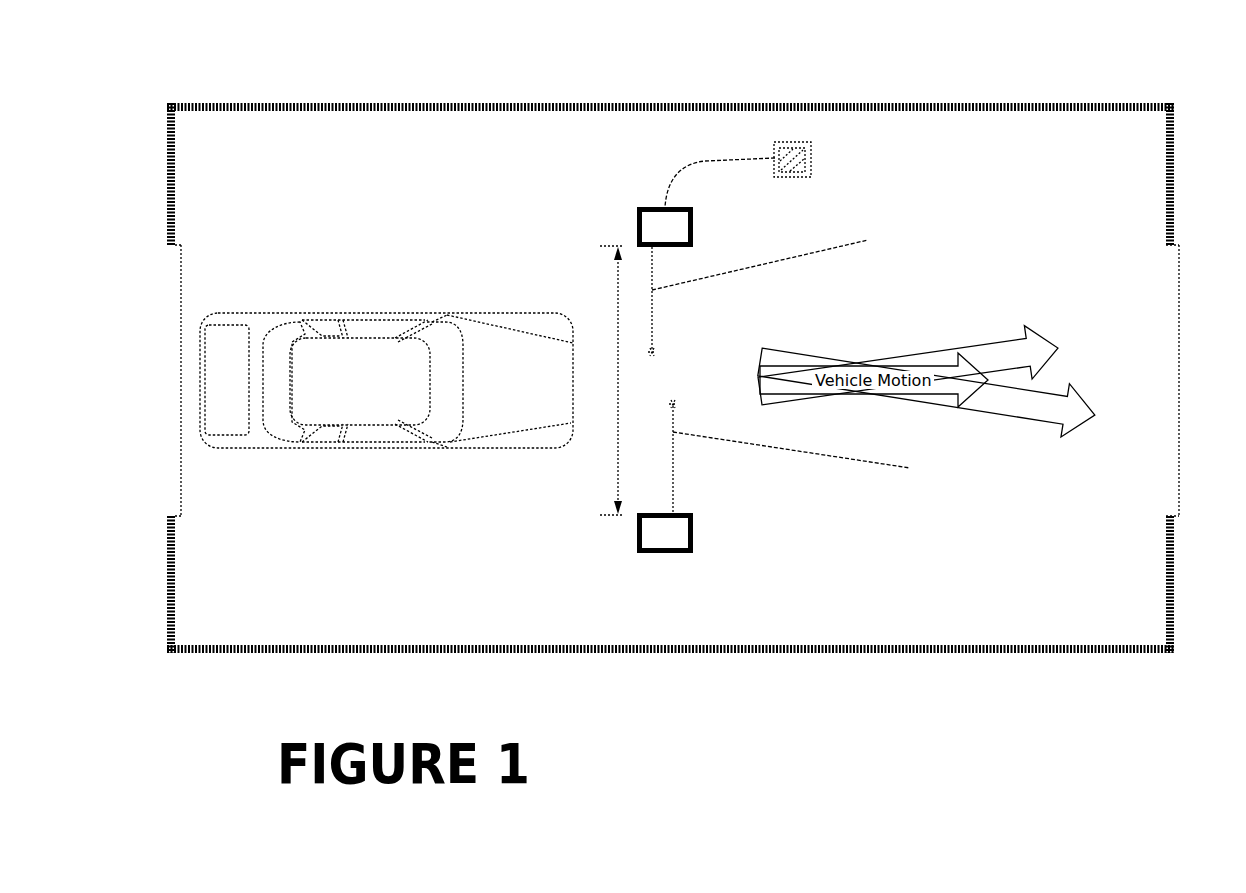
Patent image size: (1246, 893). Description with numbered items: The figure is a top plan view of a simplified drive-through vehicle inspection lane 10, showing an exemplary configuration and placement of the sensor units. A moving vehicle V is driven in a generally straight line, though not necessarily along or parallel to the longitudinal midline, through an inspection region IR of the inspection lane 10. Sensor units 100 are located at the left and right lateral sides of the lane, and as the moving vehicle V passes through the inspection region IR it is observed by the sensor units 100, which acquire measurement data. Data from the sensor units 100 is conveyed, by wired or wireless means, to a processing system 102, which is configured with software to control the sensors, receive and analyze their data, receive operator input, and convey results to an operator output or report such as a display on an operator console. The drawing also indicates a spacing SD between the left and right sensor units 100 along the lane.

The inspection lane 10 is at (1020, 655).
The sensor unit 100 is at (643, 207).
The processing system 102 is at (790, 142).
The moving vehicle V is at (358, 372).
The inspection region IR is at (422, 512).
The separation distance SD is at (613, 380).